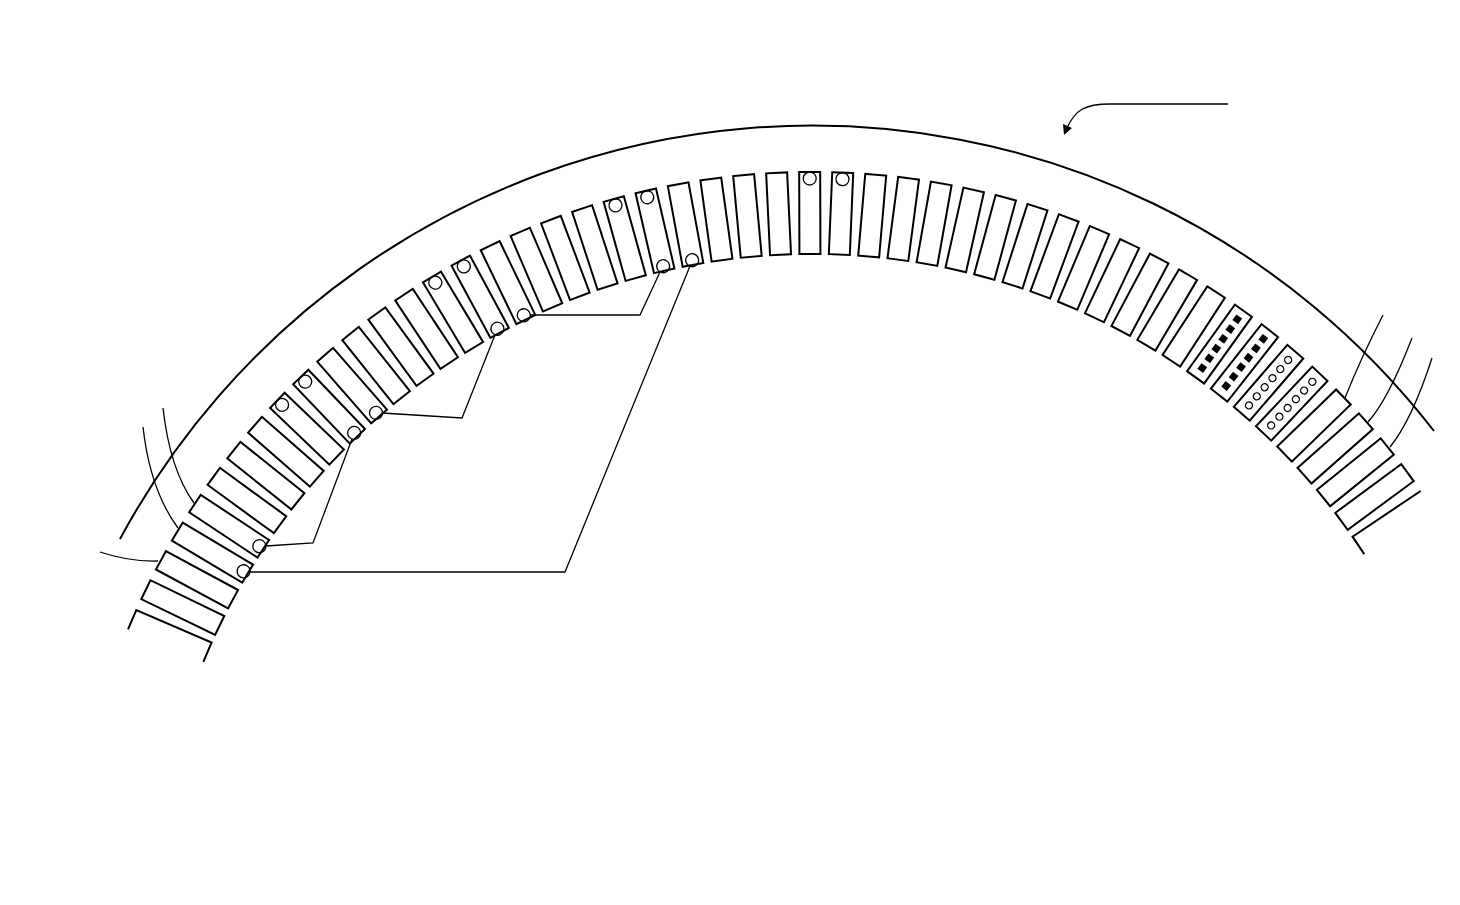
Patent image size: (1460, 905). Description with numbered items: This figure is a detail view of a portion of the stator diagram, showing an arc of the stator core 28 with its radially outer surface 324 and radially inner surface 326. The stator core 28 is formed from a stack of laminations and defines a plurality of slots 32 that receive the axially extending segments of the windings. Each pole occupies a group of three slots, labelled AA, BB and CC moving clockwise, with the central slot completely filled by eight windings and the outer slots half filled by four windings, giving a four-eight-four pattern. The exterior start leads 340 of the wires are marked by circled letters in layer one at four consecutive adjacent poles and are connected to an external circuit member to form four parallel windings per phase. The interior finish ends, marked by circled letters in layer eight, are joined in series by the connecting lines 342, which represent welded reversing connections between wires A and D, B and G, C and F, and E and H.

The stator core 28 is at (759, 404).
The radially outer surface 324 is at (1283, 278).
The radially inner surface 326 is at (1131, 350).
The slot 32 is at (1344, 530).
The outside lead wire 340 is at (278, 400).
The connecting line 342 is at (620, 317).